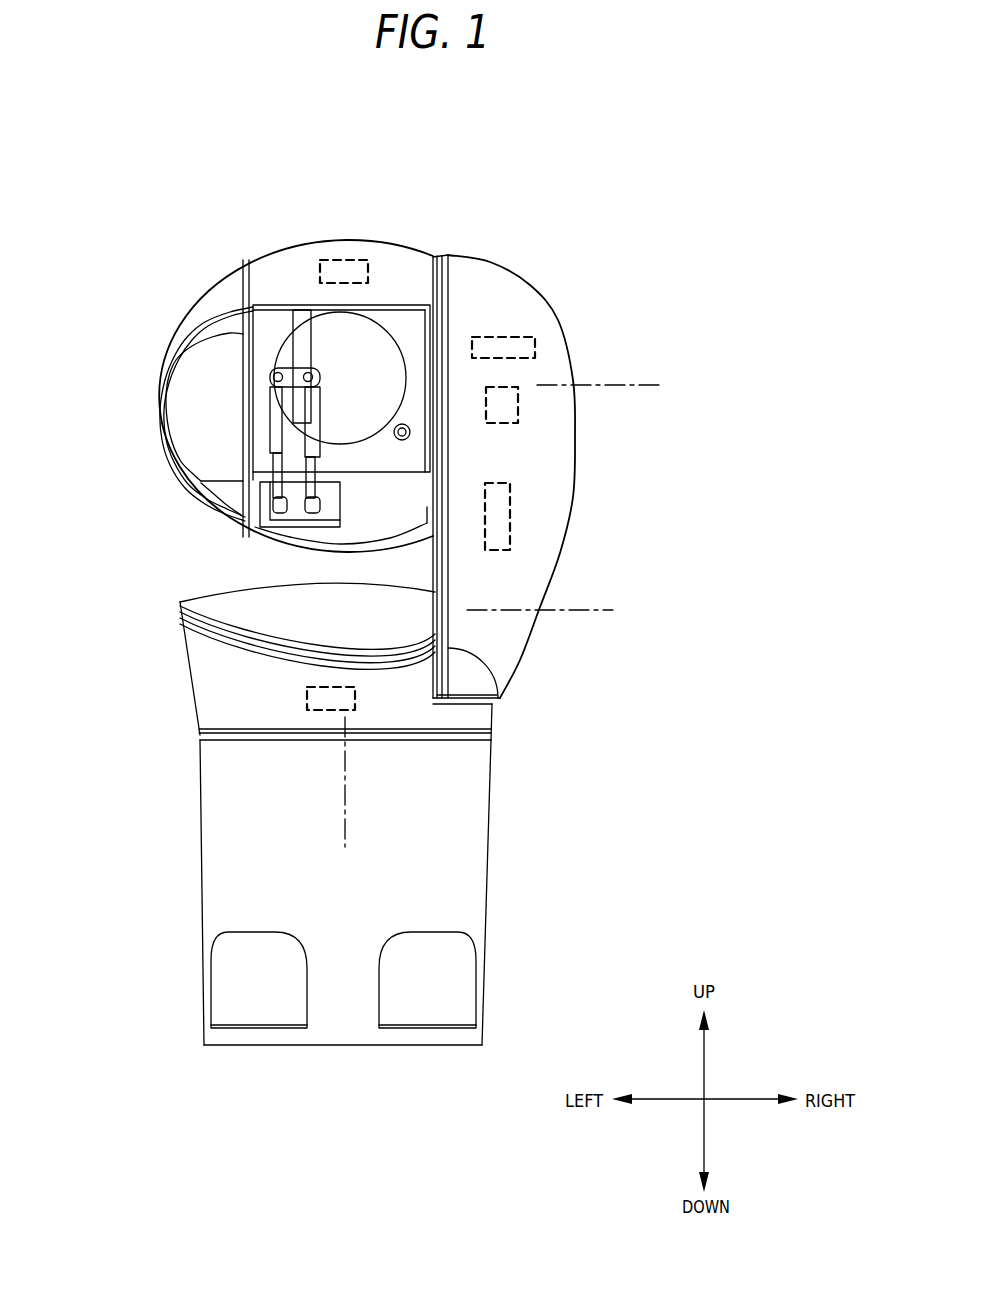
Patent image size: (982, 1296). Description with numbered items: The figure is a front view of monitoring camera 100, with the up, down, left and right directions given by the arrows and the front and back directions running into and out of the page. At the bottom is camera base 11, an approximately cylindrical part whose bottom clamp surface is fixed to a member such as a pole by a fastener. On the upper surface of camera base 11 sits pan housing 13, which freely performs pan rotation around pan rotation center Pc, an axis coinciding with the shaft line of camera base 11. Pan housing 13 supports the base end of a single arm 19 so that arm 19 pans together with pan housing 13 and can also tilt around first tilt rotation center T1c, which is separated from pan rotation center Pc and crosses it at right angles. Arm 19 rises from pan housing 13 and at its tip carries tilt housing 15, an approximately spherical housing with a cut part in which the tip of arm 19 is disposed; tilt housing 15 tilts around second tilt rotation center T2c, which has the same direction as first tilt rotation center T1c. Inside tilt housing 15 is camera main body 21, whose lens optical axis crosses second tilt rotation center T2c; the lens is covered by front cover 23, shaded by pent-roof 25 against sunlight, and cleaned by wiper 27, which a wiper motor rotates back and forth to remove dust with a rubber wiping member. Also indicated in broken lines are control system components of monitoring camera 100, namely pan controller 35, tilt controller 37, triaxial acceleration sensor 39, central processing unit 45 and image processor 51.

The monitoring camera 100 is at (172, 181).
The tilt housing 15 is at (273, 252).
The pent-roof 25 is at (270, 308).
The camera main body 21 is at (386, 308).
The front cover 23 is at (385, 352).
The wiper 27 is at (307, 402).
The arm 19 is at (573, 497).
The central processing unit 45 is at (355, 260).
The image processor 51 is at (535, 344).
The triaxial acceleration sensor 39 is at (518, 412).
The tilt controller 37 is at (510, 538).
The pan controller 35 is at (356, 703).
The second tilt rotation center T2c is at (651, 385).
The first tilt rotation center T1c is at (592, 610).
The pan rotation center Pc is at (345, 832).
The pan housing 13 is at (185, 678).
The camera base 11 is at (483, 850).